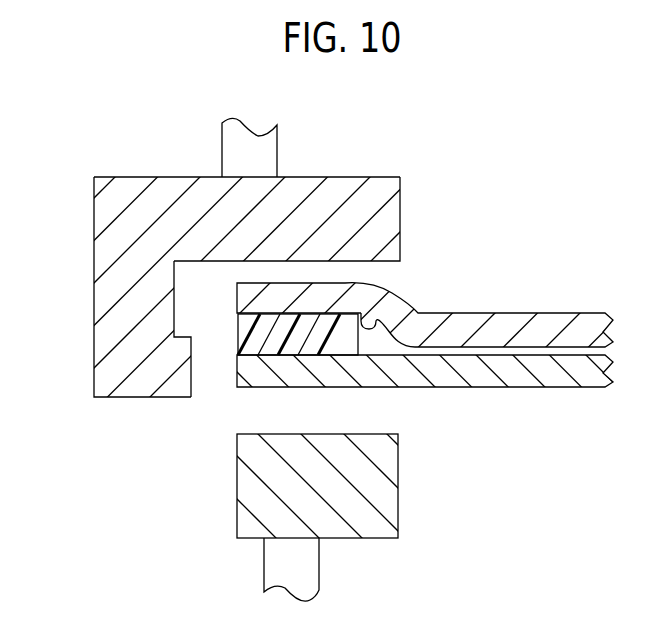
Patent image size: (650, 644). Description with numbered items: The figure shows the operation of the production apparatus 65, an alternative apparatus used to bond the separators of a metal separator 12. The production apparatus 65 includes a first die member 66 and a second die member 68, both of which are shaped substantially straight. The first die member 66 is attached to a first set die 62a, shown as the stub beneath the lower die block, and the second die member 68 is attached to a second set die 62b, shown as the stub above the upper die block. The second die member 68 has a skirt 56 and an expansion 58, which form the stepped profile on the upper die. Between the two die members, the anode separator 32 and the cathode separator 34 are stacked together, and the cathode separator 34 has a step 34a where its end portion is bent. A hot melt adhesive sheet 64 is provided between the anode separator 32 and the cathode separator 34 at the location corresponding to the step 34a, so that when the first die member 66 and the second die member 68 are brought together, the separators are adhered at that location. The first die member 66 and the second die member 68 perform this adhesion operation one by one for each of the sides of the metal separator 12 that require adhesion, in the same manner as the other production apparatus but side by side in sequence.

The metal separator 12 is at (566, 298).
The anode separator 32 is at (502, 368).
The cathode separator 34 is at (492, 325).
The step 34a is at (372, 327).
The skirt 56 is at (252, 294).
The expansion 58 is at (185, 370).
The first set die 62a is at (308, 563).
The second set die 62b is at (265, 153).
The hot melt adhesive sheet 64 is at (340, 338).
The production apparatus 65 is at (427, 137).
The first die member 66 is at (237, 564).
The second die member 68 is at (152, 174).